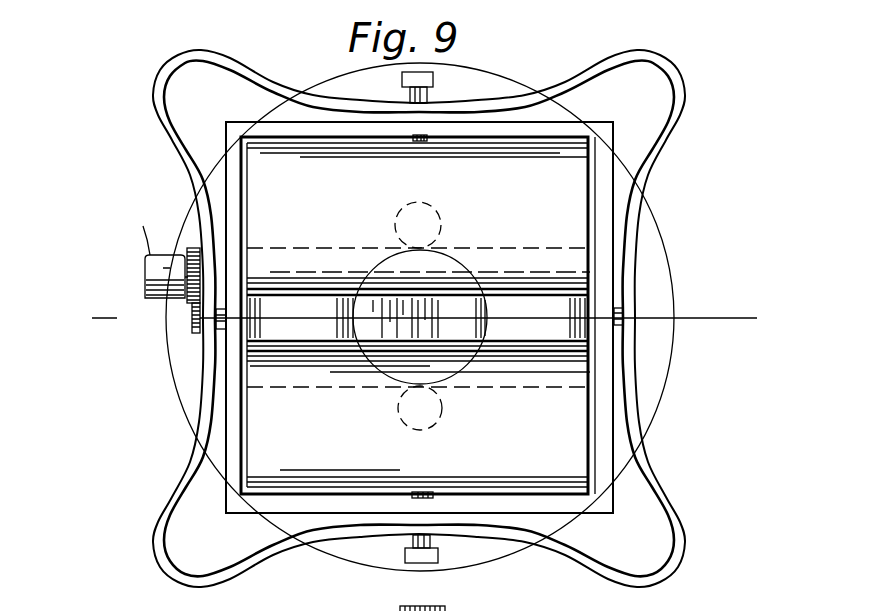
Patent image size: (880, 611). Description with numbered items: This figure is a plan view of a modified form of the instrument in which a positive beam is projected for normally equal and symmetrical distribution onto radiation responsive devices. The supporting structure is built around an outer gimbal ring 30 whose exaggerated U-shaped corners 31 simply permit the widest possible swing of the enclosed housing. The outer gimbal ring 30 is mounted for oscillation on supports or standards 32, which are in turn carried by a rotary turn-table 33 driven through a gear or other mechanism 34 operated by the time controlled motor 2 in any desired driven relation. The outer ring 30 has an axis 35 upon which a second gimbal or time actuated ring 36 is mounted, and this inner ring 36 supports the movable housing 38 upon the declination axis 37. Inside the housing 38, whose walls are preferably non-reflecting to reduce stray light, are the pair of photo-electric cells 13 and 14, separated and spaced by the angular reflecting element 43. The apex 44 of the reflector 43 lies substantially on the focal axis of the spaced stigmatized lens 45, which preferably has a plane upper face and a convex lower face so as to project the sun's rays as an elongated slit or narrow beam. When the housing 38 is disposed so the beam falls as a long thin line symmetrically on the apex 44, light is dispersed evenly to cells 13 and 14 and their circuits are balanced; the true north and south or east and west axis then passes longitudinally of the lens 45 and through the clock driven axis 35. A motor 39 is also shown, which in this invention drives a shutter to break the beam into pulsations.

The time controlled motor 2 is at (186, 303).
The photo-electric cell 13 is at (435, 207).
The photo-electric cell 14 is at (438, 395).
The outer gimbal ring 30 is at (637, 382).
The U-shaped corners 31 is at (171, 495).
The supports or standards 32 is at (438, 80).
The rotary turn-table 33 is at (667, 330).
The gear or other mechanism 34 is at (347, 314).
The axis 35 is at (217, 333).
The second gimbal or time actuated ring 36 is at (605, 250).
The declination axis 37 is at (419, 141).
The movable housing 38 is at (513, 490).
The motor 39 is at (404, 552).
The angular reflecting element 43 is at (477, 248).
The apex 44 is at (559, 306).
The stigmatized lens 45 is at (485, 320).